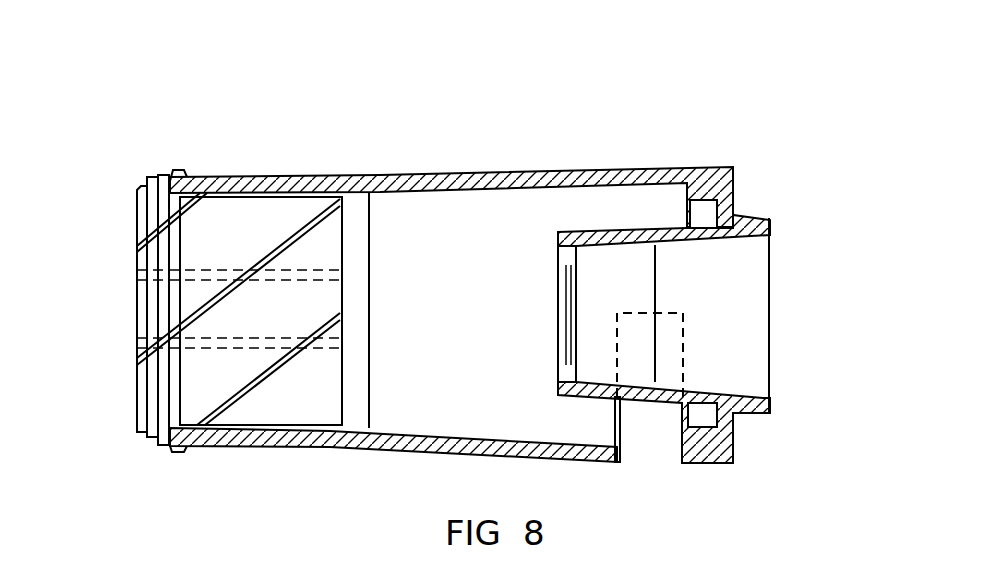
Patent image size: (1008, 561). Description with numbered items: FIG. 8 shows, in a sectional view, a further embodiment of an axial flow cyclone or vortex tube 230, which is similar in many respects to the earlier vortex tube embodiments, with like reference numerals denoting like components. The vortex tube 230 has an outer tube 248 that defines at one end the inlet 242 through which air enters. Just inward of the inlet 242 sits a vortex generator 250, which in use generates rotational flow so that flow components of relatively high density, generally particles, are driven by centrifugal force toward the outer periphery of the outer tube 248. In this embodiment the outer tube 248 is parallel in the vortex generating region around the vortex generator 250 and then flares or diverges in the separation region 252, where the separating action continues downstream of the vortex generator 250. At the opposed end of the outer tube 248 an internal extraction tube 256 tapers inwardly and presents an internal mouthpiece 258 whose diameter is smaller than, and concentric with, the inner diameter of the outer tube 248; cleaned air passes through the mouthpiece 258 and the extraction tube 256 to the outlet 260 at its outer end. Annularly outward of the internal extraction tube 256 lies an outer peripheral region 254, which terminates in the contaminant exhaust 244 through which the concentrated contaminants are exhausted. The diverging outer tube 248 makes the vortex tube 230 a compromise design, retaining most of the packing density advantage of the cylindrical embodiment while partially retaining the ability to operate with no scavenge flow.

The vortex tube 230 is at (512, 102).
The inlet 242 is at (130, 222).
The contaminant exhaust 244 is at (610, 421).
The outer tube 248 is at (355, 188).
The vortex generator 250 is at (237, 210).
The separation region 252 is at (489, 222).
The outer peripheral region 254 is at (552, 213).
The internal extraction tube 256 is at (672, 231).
The mouthpiece 258 is at (584, 316).
The outlet 260 is at (757, 343).